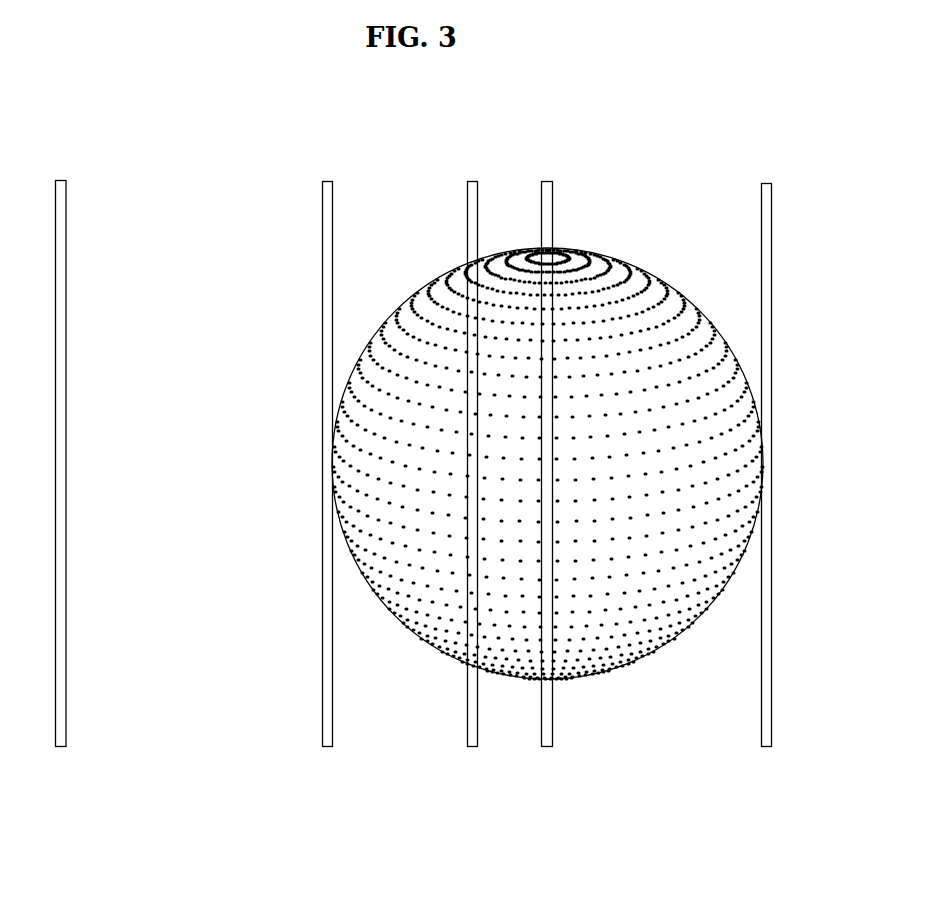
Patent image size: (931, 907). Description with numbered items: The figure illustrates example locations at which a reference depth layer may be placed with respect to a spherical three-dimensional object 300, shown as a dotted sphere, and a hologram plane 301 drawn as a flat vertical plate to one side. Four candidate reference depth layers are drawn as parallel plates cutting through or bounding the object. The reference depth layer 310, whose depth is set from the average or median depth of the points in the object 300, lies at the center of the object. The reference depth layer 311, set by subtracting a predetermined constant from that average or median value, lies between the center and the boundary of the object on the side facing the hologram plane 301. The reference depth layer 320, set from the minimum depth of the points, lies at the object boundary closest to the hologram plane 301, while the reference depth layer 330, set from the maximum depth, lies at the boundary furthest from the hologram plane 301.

The 3D object 300 is at (636, 262).
The hologram plane 301 is at (60, 180).
The reference depth layer 310 is at (547, 181).
The reference depth layer 311 is at (472, 181).
The reference depth layer 320 is at (327, 181).
The reference depth layer 330 is at (766, 183).